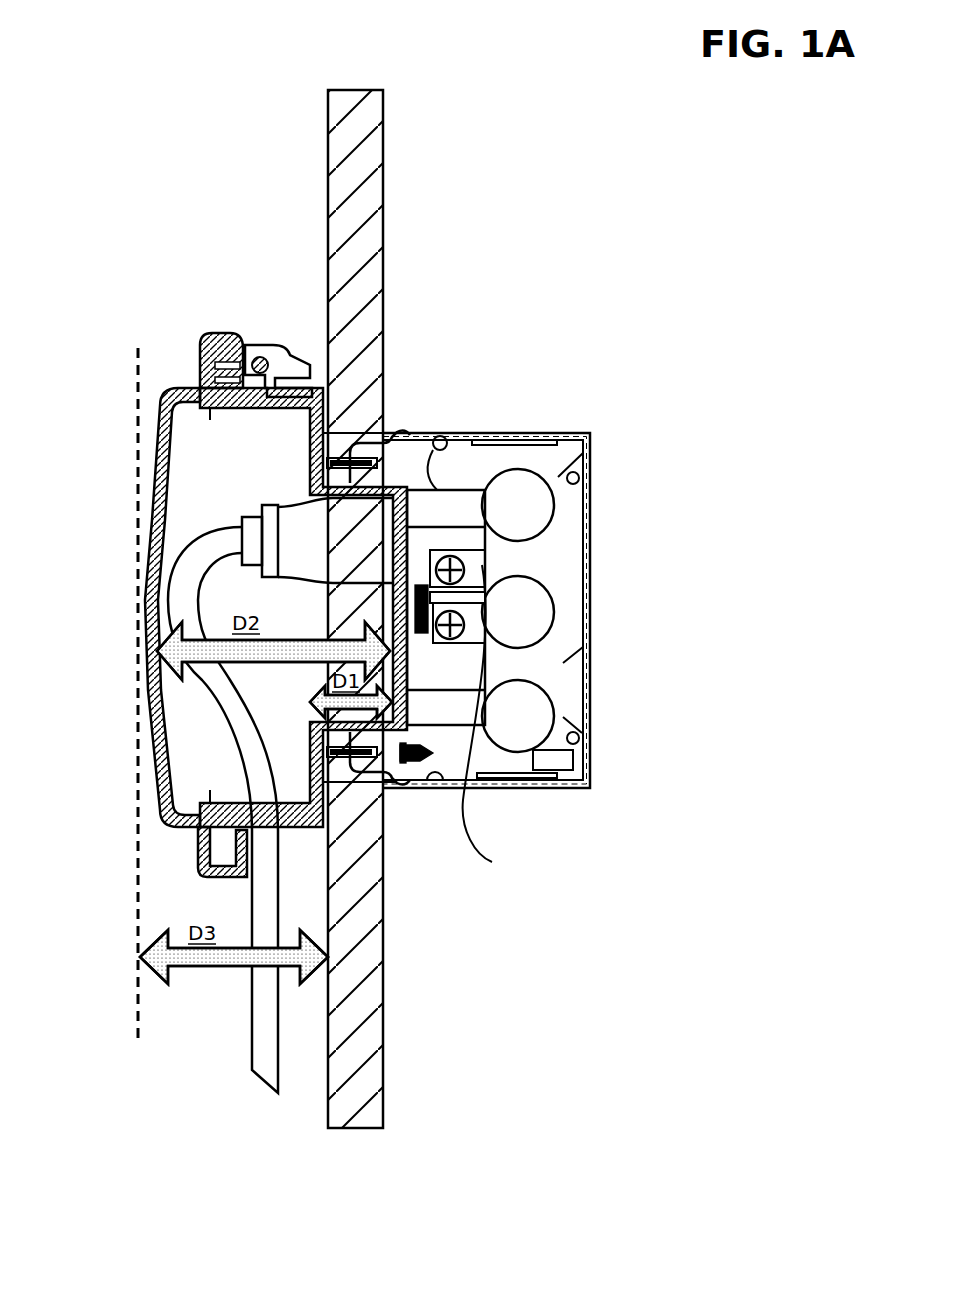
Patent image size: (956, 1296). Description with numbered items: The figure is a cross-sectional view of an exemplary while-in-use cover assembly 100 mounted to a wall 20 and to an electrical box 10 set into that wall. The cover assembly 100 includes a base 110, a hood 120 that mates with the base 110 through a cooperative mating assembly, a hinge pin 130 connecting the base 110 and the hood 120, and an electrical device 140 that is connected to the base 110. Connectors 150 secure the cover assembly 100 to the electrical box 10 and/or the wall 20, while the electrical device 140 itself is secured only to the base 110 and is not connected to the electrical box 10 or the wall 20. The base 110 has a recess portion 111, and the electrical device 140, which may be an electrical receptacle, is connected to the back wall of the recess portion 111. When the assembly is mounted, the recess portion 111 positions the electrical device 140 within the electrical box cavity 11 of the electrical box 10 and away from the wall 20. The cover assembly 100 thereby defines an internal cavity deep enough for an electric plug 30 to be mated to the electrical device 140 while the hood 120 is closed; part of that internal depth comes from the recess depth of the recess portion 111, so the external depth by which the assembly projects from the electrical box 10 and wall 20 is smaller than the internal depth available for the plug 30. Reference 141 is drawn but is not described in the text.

The electrical box 10 is at (518, 433).
The electrical box cavity 11 is at (557, 480).
The wall 20 is at (336, 170).
The electric plug 30 is at (354, 546).
The WIU cover assembly 100 is at (160, 296).
The base 110 is at (310, 460).
The recess portion 111 is at (395, 607).
The hood 120 is at (140, 678).
The hinge pin 130 is at (259, 322).
The electrical device 140 is at (440, 436).
The wire lead 141 is at (503, 717).
The connectors 150 is at (347, 453).